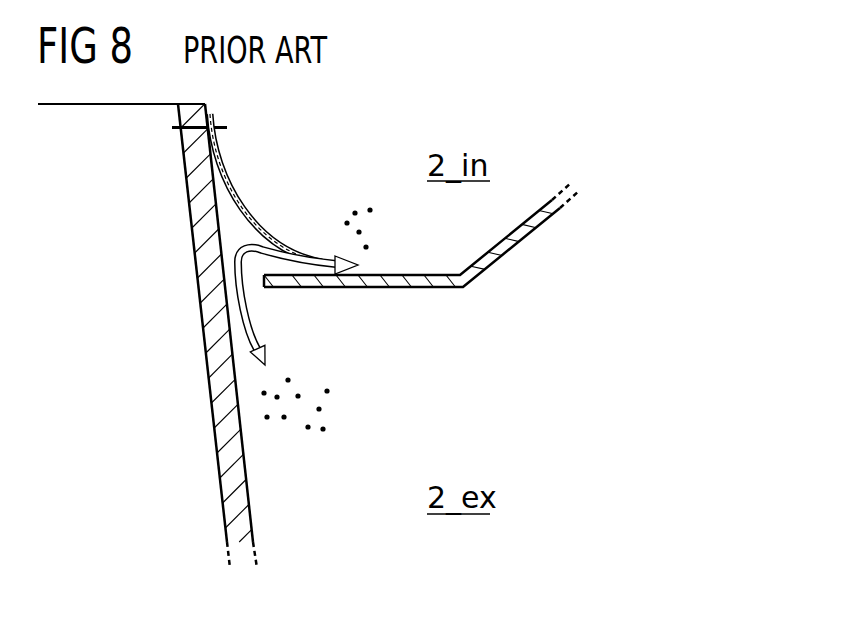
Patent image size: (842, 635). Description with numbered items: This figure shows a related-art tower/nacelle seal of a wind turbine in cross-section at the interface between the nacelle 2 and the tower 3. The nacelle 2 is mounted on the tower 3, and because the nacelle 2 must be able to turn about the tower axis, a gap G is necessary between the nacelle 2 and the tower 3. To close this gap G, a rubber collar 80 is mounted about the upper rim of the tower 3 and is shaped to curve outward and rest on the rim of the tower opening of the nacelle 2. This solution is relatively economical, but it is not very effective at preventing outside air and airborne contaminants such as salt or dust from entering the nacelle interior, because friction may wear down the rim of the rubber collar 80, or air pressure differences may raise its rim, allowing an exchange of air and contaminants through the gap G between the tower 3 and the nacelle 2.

The rubber collar 80 is at (243, 202).
The nacelle 2 is at (397, 275).
The tower 3 is at (237, 484).
The gap G is at (261, 300).